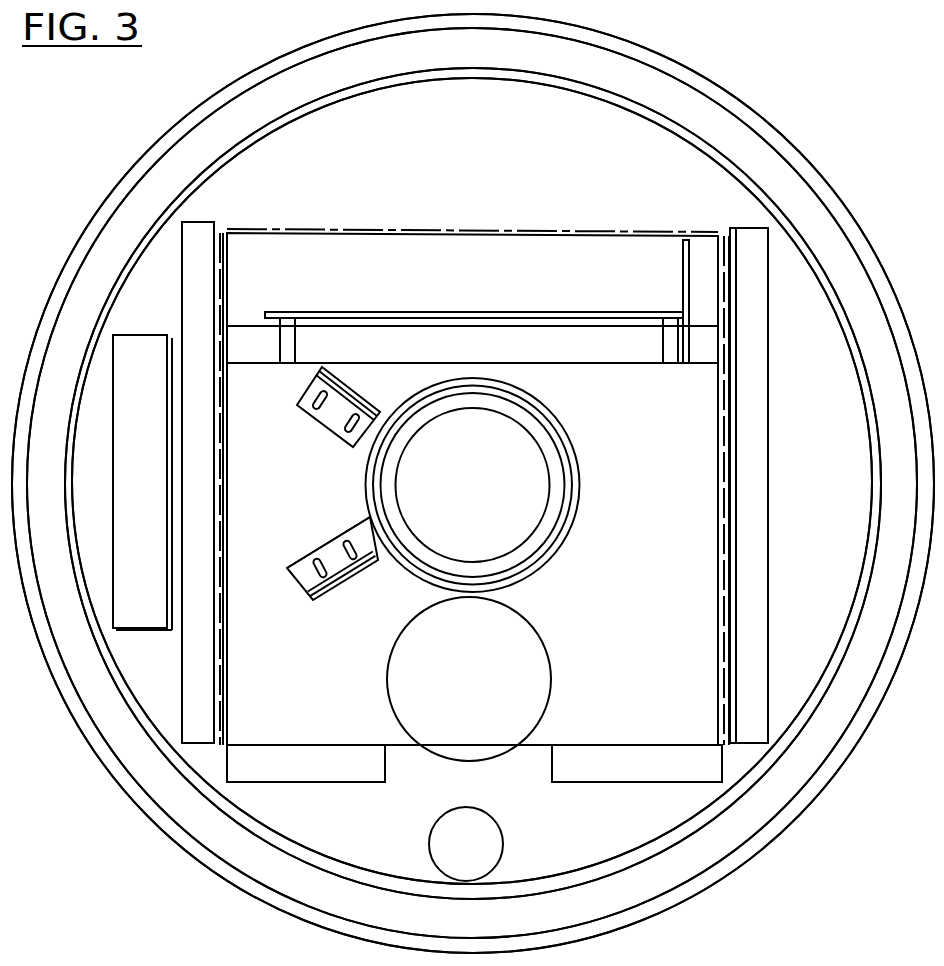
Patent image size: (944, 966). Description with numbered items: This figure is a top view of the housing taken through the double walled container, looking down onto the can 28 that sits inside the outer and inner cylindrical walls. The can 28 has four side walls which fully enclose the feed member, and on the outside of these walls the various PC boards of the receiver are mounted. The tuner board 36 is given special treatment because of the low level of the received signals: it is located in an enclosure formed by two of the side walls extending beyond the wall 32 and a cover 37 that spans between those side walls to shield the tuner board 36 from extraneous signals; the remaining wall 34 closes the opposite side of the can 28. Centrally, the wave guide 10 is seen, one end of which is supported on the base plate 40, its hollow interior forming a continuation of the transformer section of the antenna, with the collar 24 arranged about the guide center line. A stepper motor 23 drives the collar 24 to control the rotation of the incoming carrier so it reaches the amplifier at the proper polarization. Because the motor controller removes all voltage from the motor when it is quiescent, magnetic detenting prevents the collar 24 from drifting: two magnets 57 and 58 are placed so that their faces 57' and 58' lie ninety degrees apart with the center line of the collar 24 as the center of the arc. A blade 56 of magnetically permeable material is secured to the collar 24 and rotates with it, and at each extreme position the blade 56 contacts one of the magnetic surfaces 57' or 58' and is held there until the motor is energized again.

The wave guide 10 is at (552, 477).
The stepper motor 23 is at (532, 653).
The collar 24 is at (571, 513).
The can 28 is at (505, 766).
The side wall 32 is at (586, 364).
The side wall 34 is at (577, 745).
The tuner board 36 is at (358, 311).
The cover 37 is at (507, 230).
The base plate 40 is at (362, 831).
The blade 56 is at (287, 568).
The magnet 57 is at (359, 395).
The magnet face 57' is at (338, 416).
The magnet 58 is at (345, 587).
The magnet face 58' is at (328, 529).